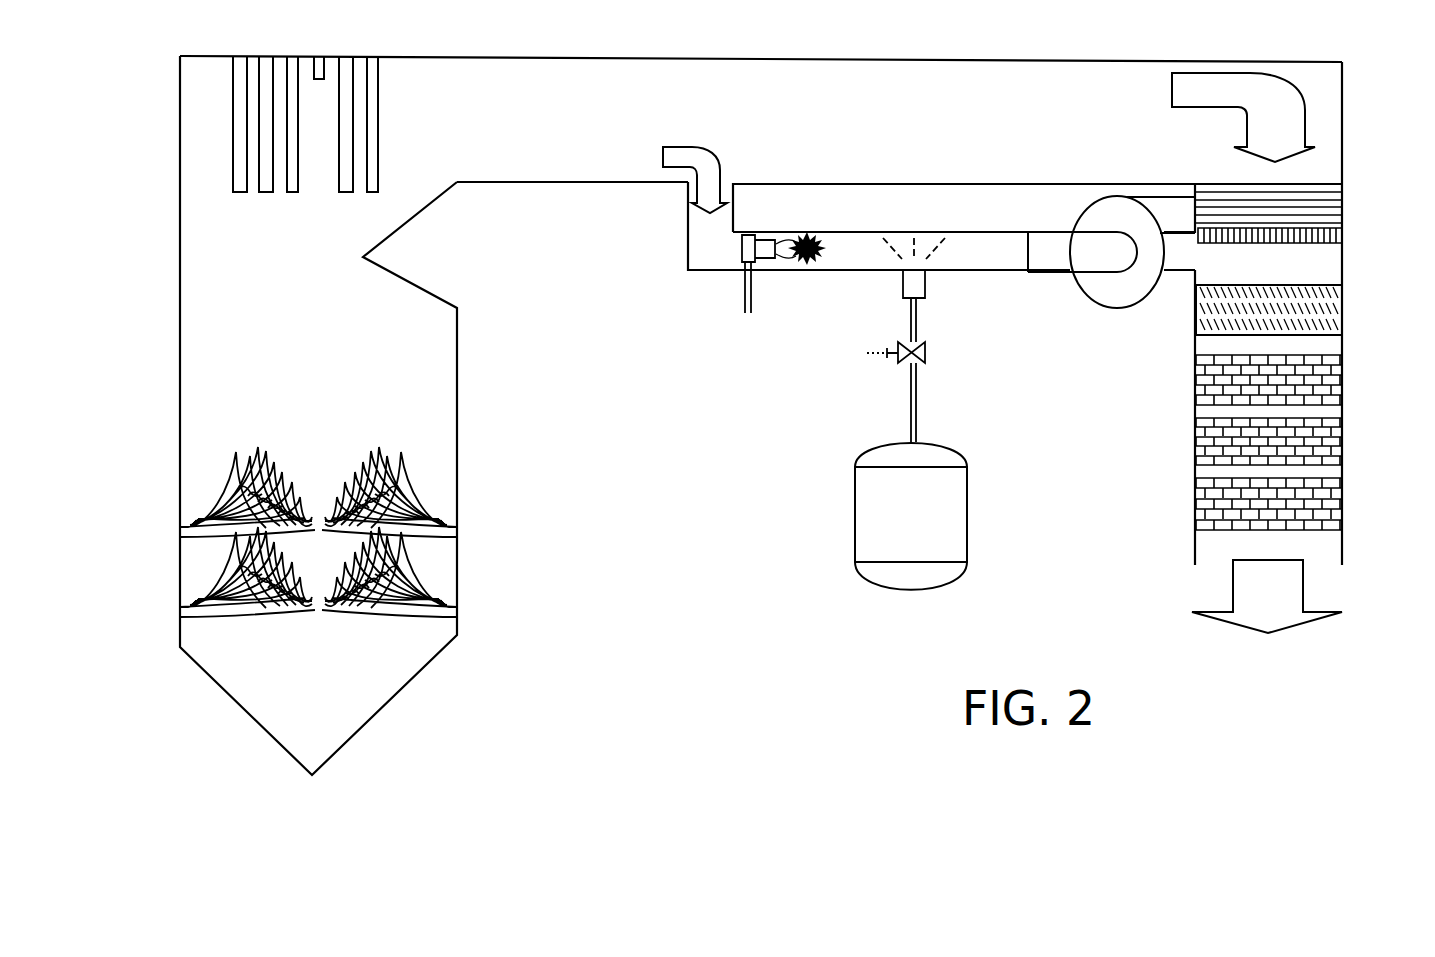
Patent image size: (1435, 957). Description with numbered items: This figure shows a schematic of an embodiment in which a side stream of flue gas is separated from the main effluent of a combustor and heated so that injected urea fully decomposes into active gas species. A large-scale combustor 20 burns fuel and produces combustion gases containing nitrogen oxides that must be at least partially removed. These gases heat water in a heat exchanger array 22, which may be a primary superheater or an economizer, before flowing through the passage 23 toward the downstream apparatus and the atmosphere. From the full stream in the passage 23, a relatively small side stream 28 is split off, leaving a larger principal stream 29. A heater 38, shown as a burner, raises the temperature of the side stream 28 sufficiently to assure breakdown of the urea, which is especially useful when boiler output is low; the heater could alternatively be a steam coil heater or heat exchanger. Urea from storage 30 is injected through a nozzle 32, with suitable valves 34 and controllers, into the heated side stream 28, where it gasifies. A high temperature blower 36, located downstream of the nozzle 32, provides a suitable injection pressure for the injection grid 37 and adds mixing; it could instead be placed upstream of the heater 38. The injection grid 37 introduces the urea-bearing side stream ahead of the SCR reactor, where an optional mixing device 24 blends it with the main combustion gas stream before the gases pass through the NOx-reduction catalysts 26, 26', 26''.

The combustor 20 is at (336, 450).
The heat exchanger array 22 is at (376, 148).
The passage 23 is at (584, 127).
The mixing device 24 is at (1300, 323).
The NOx-reduction catalyst 26 is at (1234, 526).
The NOx-reduction catalyst 26' is at (1226, 462).
The NOx-reduction catalyst 26'' is at (1229, 387).
The side stream 28 is at (688, 210).
The principal stream 29 is at (874, 135).
The storage 30 is at (932, 552).
The nozzle 32 is at (920, 284).
The valves 34 is at (892, 357).
The high temperature blower 36 is at (1090, 205).
The injection grid 37 is at (1312, 227).
The heater 38 is at (745, 306).